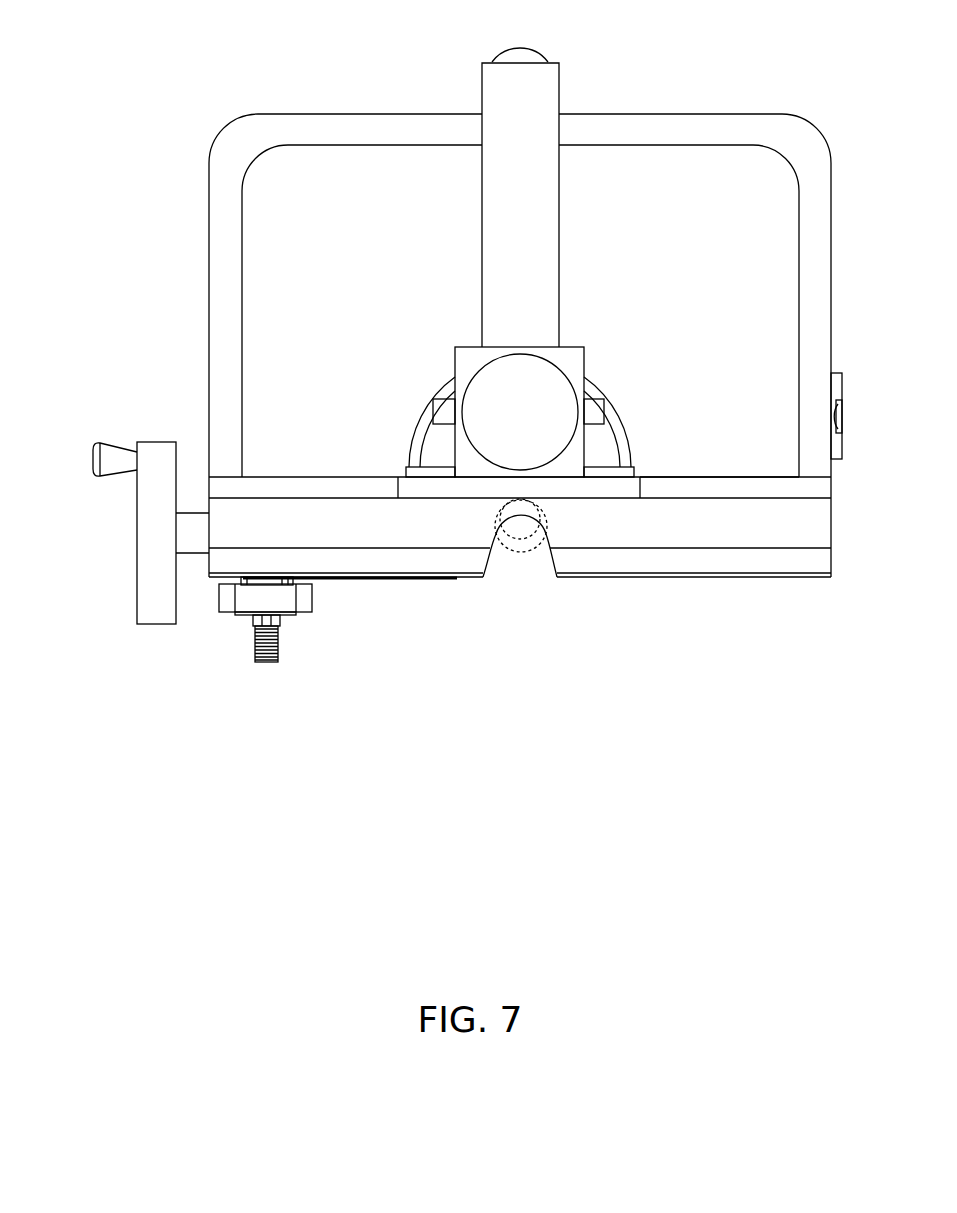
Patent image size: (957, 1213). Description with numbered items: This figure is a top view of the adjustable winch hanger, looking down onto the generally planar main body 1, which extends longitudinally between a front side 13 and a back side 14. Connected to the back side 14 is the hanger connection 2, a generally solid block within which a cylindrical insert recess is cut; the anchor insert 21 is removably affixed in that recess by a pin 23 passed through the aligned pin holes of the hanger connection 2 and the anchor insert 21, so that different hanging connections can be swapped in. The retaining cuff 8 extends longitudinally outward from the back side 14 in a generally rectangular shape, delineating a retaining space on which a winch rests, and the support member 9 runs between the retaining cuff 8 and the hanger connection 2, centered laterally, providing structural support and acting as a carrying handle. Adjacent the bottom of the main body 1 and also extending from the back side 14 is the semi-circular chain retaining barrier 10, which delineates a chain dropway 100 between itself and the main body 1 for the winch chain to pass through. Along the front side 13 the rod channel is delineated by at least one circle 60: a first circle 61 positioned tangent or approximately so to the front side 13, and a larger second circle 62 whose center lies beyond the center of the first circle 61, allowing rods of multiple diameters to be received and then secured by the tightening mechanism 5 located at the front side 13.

The main body 1 is at (345, 483).
The hanger connection 2 is at (584, 334).
The tightening mechanism 5 is at (200, 684).
The retaining cuff 8 is at (335, 120).
The support member 9 is at (495, 271).
The chain retaining barrier 10 is at (625, 410).
The front side 13 is at (760, 512).
The back side 14 is at (724, 460).
The anchor insert 21 is at (507, 425).
The pin 23 is at (437, 402).
The at least one circle 60 is at (530, 574).
The first circle 61 is at (543, 517).
The second circle 62 is at (547, 550).
The chain dropway 100 is at (604, 436).